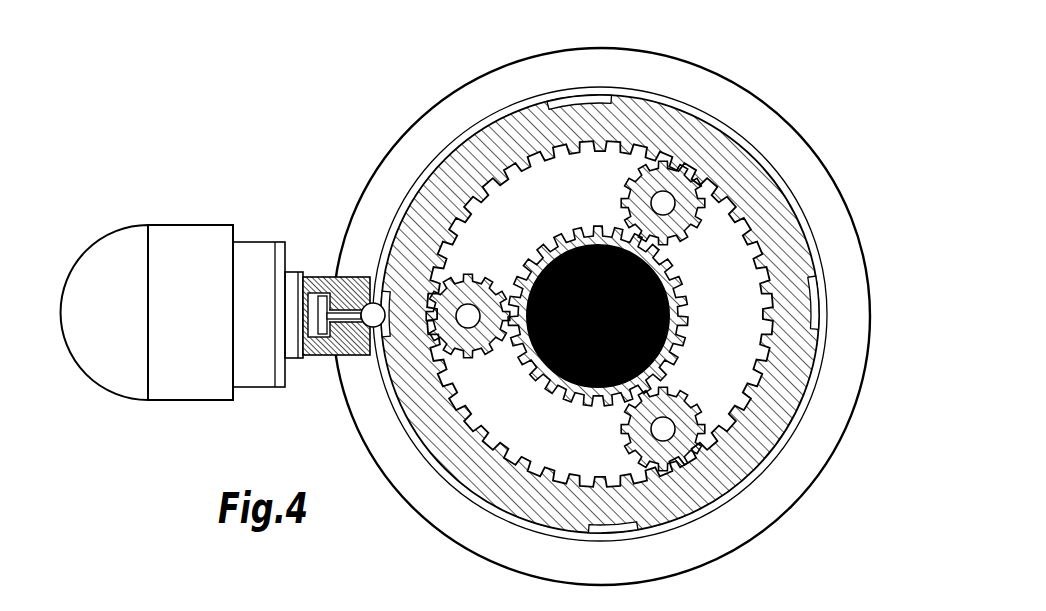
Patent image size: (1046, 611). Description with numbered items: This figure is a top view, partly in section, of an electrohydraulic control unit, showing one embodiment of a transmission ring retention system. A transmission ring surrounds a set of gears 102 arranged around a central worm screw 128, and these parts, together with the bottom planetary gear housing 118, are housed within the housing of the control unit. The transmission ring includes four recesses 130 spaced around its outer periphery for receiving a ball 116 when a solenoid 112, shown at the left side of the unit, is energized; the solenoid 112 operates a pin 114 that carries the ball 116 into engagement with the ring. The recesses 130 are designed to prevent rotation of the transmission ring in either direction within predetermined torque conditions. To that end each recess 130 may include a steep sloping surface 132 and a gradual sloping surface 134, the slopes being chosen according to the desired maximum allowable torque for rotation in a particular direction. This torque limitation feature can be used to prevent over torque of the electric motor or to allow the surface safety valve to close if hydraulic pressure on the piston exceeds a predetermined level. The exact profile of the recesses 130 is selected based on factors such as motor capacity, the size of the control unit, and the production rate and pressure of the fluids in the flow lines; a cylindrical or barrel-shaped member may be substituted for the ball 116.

The gears 102 is at (486, 280).
The solenoid 112 is at (164, 223).
The pin 114 is at (312, 277).
The ball 116 is at (372, 302).
The bottom planetary gear housing 118 is at (584, 230).
The worm screw 128 is at (562, 385).
The recesses 130 is at (567, 100).
The steep sloping surface 132 is at (813, 318).
The gradual sloping surface 134 is at (815, 282).